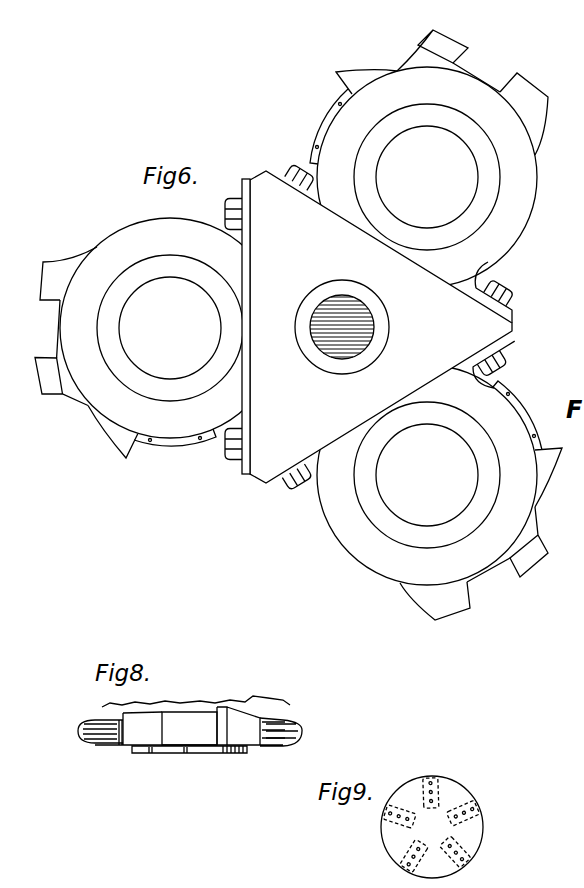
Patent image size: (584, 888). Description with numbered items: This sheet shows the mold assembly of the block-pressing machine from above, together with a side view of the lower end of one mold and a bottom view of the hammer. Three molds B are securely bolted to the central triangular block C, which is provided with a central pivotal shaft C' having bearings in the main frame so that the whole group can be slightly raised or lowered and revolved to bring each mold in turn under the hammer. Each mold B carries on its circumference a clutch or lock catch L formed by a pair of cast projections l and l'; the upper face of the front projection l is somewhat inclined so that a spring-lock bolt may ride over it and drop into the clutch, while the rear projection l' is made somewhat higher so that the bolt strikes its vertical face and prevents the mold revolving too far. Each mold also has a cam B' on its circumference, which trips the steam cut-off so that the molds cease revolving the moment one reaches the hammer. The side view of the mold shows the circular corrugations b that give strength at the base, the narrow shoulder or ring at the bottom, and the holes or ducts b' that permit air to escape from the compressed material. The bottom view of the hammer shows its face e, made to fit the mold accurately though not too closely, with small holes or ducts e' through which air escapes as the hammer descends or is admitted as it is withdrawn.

In FIG. 6, the mold B is at (298, 326).
In FIG. 8, the mold B is at (190, 713).
In FIG. 6, the cam B' is at (335, 288).
In FIG. 6, the central triangular block C is at (369, 327).
In FIG. 6, the central pivotal shaft C' is at (342, 344).
In FIG. 6, the clutch L is at (274, 330).
In FIG. 8, the clutch L is at (189, 728).
In FIG. 6, the front projection l is at (294, 346).
In FIG. 8, the front projection l is at (142, 728).
In FIG. 6, the rear projection l' is at (291, 303).
In FIG. 8, the rear projection l' is at (238, 726).
In FIG. 8, the circular projections or corrugations b is at (282, 724).
In FIG. 8, the holes or ducts b' is at (192, 763).
In FIG. 9, the hammer face e is at (432, 827).
In FIG. 9, the holes or ducts e' is at (434, 825).